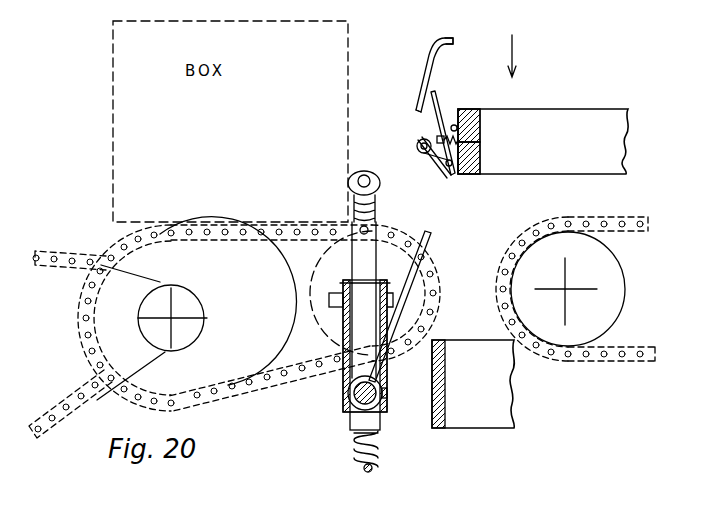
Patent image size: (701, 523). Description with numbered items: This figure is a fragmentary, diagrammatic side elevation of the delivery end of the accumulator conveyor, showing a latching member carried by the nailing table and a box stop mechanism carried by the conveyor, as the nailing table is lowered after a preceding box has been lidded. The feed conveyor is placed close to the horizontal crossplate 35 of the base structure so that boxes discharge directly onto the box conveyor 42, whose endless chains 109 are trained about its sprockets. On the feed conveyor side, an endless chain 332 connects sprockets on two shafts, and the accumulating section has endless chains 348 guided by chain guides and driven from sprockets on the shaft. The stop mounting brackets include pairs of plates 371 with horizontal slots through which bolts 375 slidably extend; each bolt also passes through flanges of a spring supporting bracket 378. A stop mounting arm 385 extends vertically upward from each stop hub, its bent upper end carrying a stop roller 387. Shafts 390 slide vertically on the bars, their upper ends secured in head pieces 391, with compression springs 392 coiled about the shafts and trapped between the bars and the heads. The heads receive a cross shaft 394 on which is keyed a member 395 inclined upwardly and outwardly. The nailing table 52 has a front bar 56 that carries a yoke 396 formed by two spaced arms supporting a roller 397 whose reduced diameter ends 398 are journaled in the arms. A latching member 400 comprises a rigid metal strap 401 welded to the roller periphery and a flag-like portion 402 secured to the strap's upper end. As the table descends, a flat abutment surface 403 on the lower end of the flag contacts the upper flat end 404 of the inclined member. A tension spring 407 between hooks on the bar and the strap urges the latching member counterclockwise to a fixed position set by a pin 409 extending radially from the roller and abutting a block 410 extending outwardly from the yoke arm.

The horizontal plate 35 is at (445, 372).
The box conveyor 42 is at (608, 223).
The nailing table 52 is at (504, 114).
The front bar 56 is at (481, 128).
The endless chains 109 is at (622, 236).
The endless chain 332 is at (346, 235).
The endless chains 348 is at (71, 250).
The plates 371 is at (387, 403).
The bolts 375 is at (330, 298).
The spring supporting bracket 378 is at (343, 278).
The stop mounting arm 385 is at (353, 206).
The stop roller 387 is at (350, 175).
The shafts 390 is at (371, 470).
The head pieces 391 is at (364, 335).
The compression springs 392 is at (351, 440).
The cross shaft 394 is at (355, 395).
The member 395 is at (431, 260).
The yoke 396 is at (440, 168).
The roller 397 is at (417, 147).
The reduced diameter ends 398 is at (428, 156).
The latching member 400 is at (428, 73).
The strap 401 is at (428, 114).
The flag-like portion 402 is at (447, 37).
The abutment surface 403 is at (417, 108).
The upper flat end 404 is at (428, 240).
The tension spring 407 is at (459, 150).
The rivet 409 is at (437, 168).
The block 410 is at (442, 137).